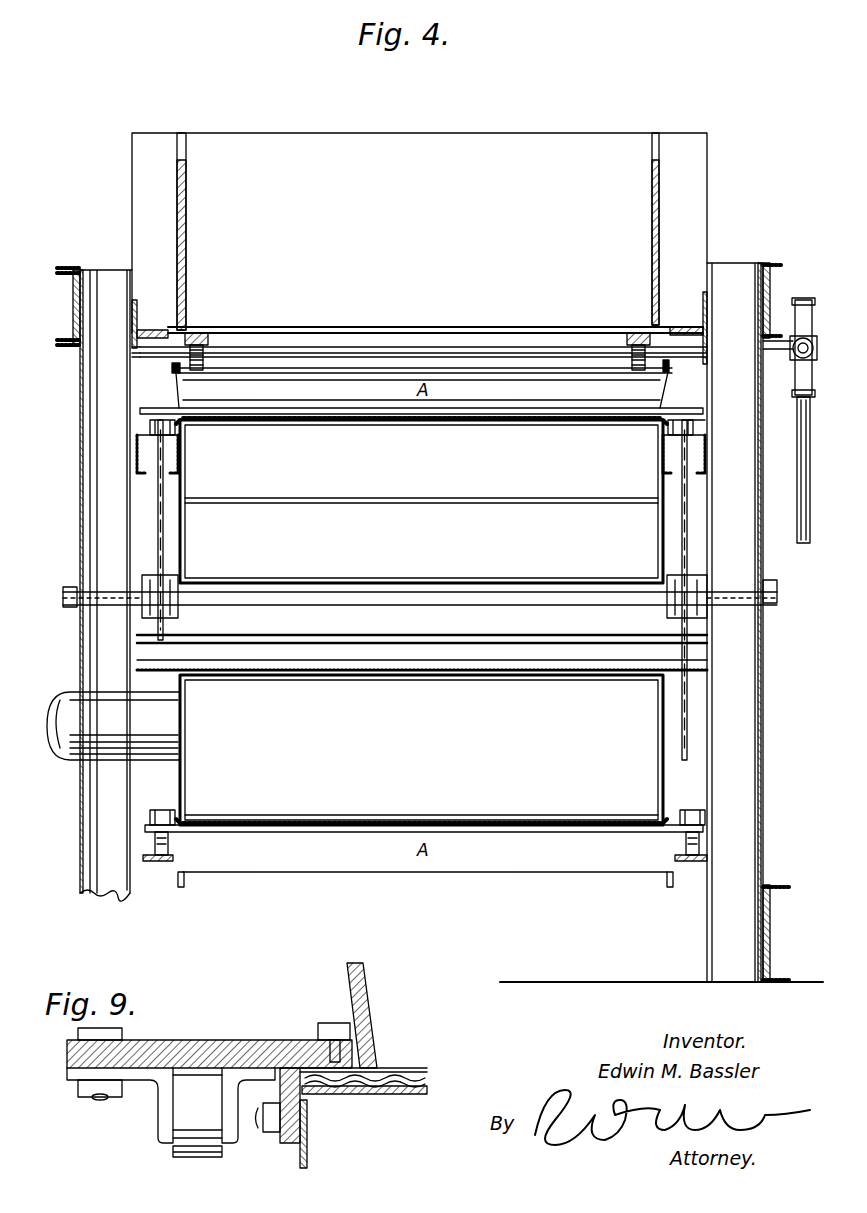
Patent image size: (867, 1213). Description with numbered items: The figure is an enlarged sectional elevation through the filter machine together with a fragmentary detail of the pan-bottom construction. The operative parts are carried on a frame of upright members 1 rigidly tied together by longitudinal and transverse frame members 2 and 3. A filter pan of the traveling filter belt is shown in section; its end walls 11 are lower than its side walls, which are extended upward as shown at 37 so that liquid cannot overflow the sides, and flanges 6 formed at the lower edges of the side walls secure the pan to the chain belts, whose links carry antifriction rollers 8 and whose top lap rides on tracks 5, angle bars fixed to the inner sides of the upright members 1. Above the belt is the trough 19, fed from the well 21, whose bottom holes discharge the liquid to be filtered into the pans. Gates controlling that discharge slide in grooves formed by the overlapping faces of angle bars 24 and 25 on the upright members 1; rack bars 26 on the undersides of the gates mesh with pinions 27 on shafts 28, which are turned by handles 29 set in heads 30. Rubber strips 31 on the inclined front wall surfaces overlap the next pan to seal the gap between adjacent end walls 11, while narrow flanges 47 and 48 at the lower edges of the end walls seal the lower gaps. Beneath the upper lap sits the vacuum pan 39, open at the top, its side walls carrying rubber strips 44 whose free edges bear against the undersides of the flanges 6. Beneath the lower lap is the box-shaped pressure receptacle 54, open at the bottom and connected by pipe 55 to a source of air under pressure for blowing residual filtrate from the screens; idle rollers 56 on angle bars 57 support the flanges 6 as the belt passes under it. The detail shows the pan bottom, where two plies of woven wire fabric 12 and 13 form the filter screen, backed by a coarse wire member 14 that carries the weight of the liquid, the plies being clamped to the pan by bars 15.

In FIG. 4, the upright frame member 1 is at (421, 622).
In FIG. 4, the longitudinal frame member 2 is at (72, 309).
In FIG. 4, the transverse frame member 3 is at (420, 622).
In FIG. 4, the track 5 is at (690, 427).
In FIG. 4, the flange 6 is at (160, 408).
In FIG. 9, the flange 6 is at (210, 1040).
In FIG. 4, the antifriction roller 8 is at (148, 432).
In FIG. 9, the antifriction roller 8 is at (171, 1092).
In FIG. 4, the end wall 11 is at (421, 390).
In FIG. 9, the filter fabric ply 12 is at (400, 1068).
In FIG. 9, the filter fabric ply 13 is at (430, 1070).
In FIG. 4, the supporting member 14 is at (450, 420).
In FIG. 9, the supporting member 14 is at (430, 1083).
In FIG. 9, the bar 15 is at (318, 1062).
In FIG. 4, the trough 19 is at (187, 226).
In FIG. 4, the well 21 is at (395, 134).
In FIG. 4, the angle bar 24 is at (157, 329).
In FIG. 4, the angle bar 25 is at (140, 343).
In FIG. 4, the rack bar 26 is at (206, 340).
In FIG. 4, the pinion 27 is at (215, 352).
In FIG. 4, the shaft 28 is at (395, 335).
In FIG. 4, the handle 29 is at (803, 543).
In FIG. 4, the head 30 is at (803, 298).
In FIG. 4, the rubber strip 31 is at (488, 372).
In FIG. 4, the side wall extension 37 is at (172, 368).
In FIG. 4, the vacuum pan 39 is at (421, 501).
In FIG. 9, the vacuum pan 39 is at (307, 1160).
In FIG. 4, the rubber strip 44 is at (180, 420).
In FIG. 9, the rubber strip 44 is at (290, 1145).
In FIG. 4, the front flange 47 is at (496, 815).
In FIG. 4, the rear flange 48 is at (577, 408).
In FIG. 4, the pressure receptacle 54 is at (421, 750).
In FIG. 4, the pipe 55 is at (113, 726).
In FIG. 4, the idle roller 56 is at (170, 848).
In FIG. 4, the angle bar 57 is at (158, 862).